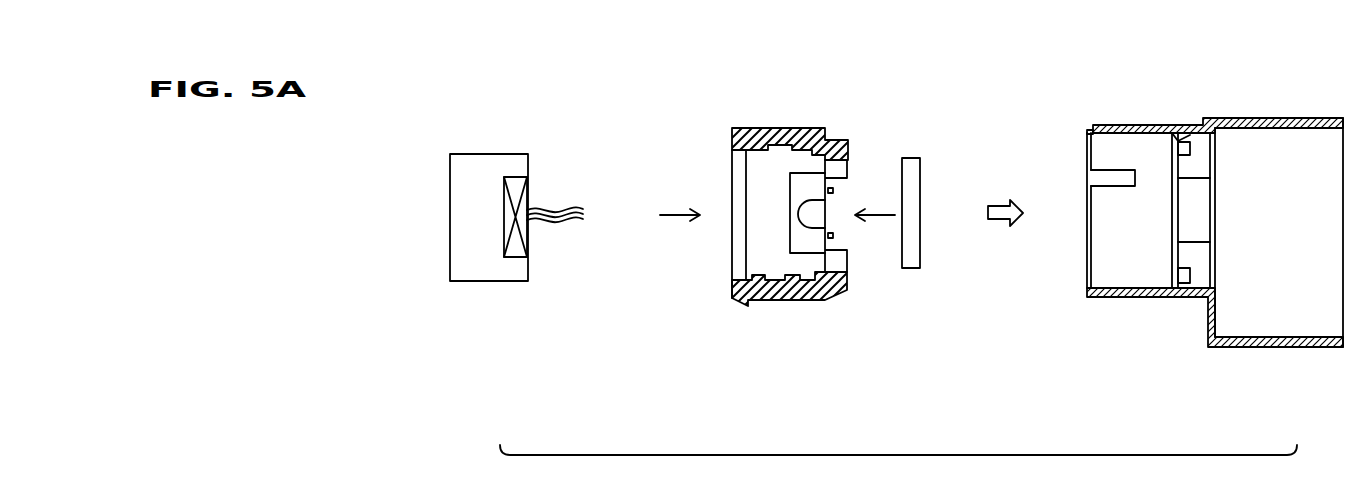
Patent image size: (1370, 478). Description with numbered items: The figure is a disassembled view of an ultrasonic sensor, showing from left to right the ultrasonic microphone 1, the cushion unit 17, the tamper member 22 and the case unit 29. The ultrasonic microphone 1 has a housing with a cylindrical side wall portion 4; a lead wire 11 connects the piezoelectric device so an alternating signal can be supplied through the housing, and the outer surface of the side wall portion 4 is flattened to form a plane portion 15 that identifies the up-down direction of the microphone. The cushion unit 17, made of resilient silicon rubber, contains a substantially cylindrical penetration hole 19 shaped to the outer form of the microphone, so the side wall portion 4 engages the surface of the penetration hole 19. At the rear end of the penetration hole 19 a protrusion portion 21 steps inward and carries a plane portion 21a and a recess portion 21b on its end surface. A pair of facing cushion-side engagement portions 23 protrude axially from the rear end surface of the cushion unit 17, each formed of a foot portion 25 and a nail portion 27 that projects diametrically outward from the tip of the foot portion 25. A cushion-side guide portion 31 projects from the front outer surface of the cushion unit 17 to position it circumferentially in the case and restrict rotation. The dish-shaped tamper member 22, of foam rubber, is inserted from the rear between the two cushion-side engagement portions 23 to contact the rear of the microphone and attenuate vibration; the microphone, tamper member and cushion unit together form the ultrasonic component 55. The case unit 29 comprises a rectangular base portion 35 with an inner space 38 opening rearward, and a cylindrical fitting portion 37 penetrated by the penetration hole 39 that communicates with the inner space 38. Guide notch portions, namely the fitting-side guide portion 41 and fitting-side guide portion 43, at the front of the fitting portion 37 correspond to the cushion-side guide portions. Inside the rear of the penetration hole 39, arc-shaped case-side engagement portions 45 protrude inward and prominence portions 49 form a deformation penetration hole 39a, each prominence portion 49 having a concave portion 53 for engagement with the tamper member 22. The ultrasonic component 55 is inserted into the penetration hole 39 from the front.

The ultrasonic microphone 1 is at (476, 160).
The side wall portion 4 is at (460, 215).
The lead wire 11 is at (553, 210).
The plane portion 15 is at (527, 236).
The cushion unit 17 is at (770, 130).
The penetration hole 19 is at (762, 187).
The protrusion portion 21 is at (822, 214).
The plane portion 21a is at (812, 183).
The recess portion 21b is at (812, 242).
The tamper member 22 is at (920, 170).
The cushion-side engagement portion 23 is at (897, 103).
The foot portion 25 is at (830, 150).
The nail portion 27 is at (841, 141).
The cushion-side guide portion 31 is at (752, 128).
The ultrasonic component 55 is at (945, 378).
The case unit 29 is at (1263, 118).
The base portion 35 is at (1297, 342).
The fitting portion 37 is at (1133, 297).
The inner space 38 is at (1312, 170).
The penetration hole 39 is at (1107, 267).
The deformation penetration hole 39a is at (1202, 163).
The fitting-side guide portion 41 is at (1090, 127).
The fitting-side guide portion 43 is at (1103, 180).
The case-side engagement portion 45 is at (1178, 133).
The prominence portion 49 is at (1207, 262).
The concave portion 53 is at (1192, 296).